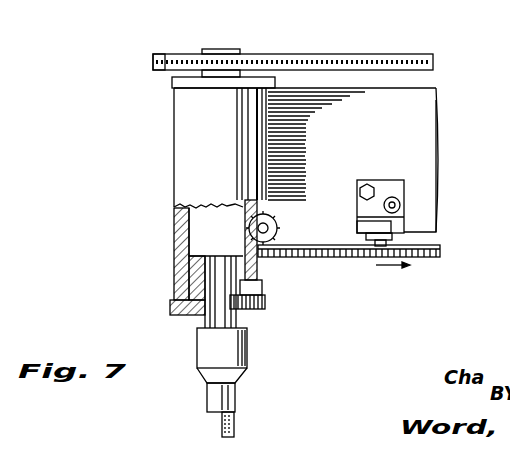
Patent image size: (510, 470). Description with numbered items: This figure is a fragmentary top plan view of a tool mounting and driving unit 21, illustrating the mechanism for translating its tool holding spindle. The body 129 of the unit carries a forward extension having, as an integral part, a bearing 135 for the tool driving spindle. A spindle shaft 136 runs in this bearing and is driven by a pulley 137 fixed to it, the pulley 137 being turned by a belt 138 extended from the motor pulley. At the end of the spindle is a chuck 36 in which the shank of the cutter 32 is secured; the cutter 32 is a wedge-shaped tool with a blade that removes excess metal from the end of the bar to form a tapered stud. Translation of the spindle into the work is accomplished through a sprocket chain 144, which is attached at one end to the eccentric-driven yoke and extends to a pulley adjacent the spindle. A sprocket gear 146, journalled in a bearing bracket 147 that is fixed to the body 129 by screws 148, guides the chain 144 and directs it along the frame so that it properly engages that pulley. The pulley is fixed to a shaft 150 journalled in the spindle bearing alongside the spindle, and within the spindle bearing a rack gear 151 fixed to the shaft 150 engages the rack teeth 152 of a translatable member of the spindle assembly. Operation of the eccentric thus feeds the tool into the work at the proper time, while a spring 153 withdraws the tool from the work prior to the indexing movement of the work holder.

The tool mounting and driving unit 21 is at (197, 152).
The cutter 32 is at (221, 397).
The chuck 36 is at (210, 356).
The body 129 is at (436, 103).
The bearing 135 is at (190, 117).
The spindle shaft 136 is at (226, 50).
The pulley 137 is at (165, 54).
The belt 138 is at (360, 56).
The sprocket chain 144 is at (440, 257).
The sprocket gear 146 is at (362, 258).
The bearing bracket 147 is at (378, 184).
The screws 148 is at (400, 205).
The shaft 150 is at (276, 224).
The rack gear 151 is at (233, 256).
The rack teeth 152 is at (248, 210).
The spring 153 is at (190, 282).